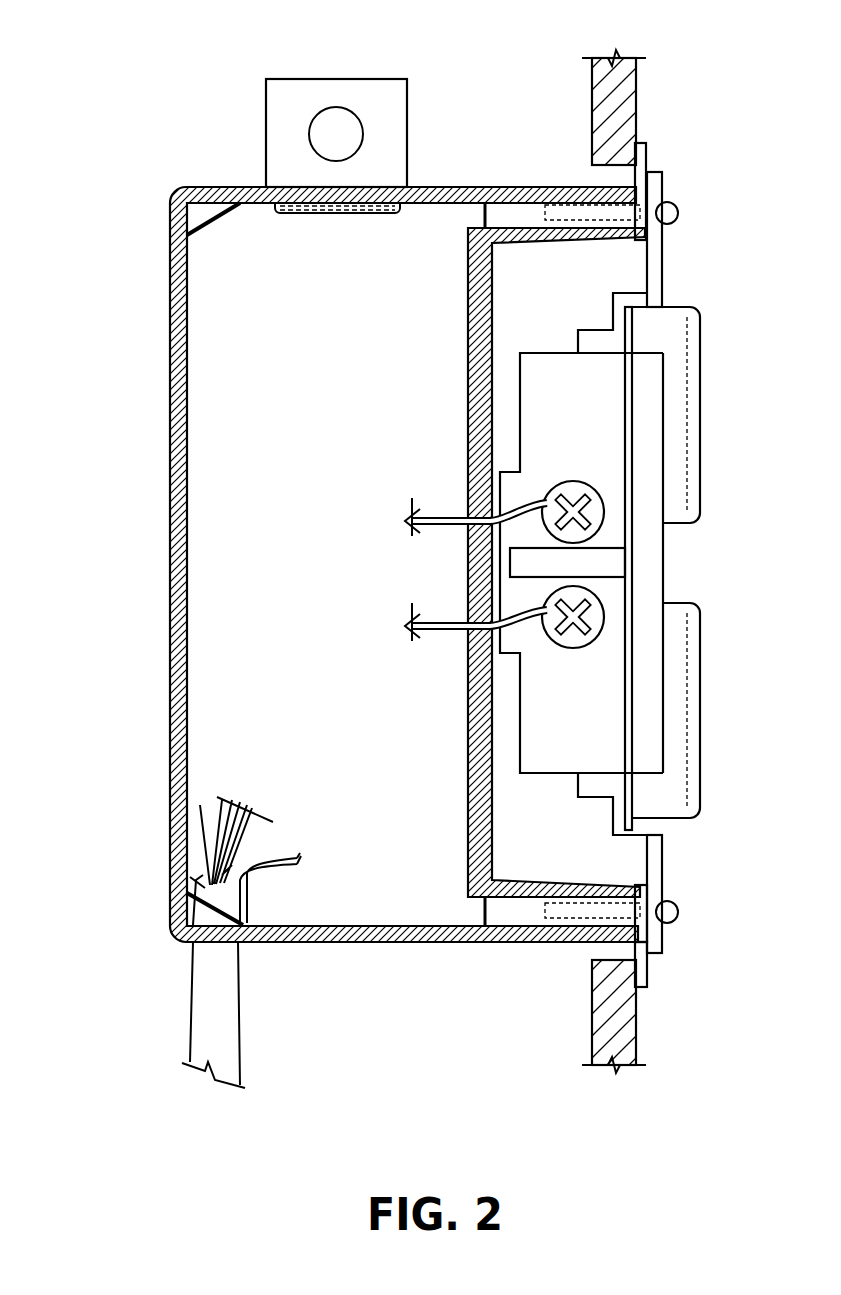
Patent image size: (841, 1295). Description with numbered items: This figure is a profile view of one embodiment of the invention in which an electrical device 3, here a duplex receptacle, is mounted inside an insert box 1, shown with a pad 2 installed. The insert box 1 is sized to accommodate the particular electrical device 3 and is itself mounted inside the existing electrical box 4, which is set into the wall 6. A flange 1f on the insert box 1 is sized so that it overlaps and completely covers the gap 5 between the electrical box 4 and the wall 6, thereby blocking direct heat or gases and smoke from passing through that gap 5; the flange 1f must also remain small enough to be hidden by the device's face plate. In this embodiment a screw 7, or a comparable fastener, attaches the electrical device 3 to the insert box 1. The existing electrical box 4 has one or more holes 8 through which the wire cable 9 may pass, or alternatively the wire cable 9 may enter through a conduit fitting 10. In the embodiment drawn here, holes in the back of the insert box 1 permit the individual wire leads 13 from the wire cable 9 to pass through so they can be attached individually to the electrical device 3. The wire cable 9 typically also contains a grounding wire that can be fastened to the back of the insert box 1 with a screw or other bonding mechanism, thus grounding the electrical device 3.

The insert box 1 is at (465, 688).
The flange 1f is at (645, 965).
The pad 2 is at (482, 788).
The electrical device 3 is at (615, 458).
The electrical box 4 is at (170, 560).
The gap 5 is at (612, 178).
The wall 6 is at (636, 108).
The screw 7 is at (678, 213).
The hole 8 is at (207, 215).
The wire cable 9 is at (205, 1005).
The conduit fitting 10 is at (312, 93).
The individual wire leads 13 is at (437, 615).